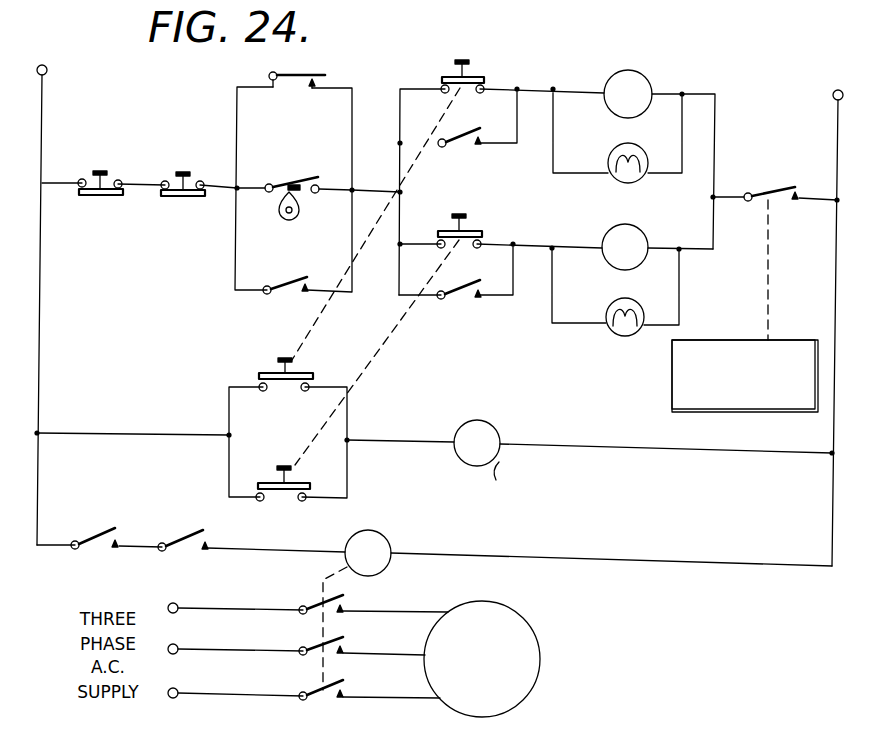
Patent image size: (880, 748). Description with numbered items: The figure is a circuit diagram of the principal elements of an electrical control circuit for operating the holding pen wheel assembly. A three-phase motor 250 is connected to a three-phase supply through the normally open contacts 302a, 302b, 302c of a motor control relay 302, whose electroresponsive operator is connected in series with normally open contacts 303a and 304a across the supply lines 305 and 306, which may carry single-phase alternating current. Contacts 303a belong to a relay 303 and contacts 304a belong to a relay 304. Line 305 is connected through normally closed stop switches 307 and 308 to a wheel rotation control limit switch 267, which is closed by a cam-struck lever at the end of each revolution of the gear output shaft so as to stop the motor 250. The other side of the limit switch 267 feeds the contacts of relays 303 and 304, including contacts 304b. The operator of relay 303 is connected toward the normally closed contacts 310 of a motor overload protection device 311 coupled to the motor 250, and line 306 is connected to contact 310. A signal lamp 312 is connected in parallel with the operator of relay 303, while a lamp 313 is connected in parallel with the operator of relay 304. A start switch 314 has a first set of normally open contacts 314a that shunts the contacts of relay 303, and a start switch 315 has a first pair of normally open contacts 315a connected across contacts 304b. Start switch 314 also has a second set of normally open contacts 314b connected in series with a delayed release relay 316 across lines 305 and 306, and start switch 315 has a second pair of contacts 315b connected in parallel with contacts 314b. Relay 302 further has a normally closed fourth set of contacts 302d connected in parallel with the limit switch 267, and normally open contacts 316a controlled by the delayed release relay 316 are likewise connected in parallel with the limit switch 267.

The motor 250 is at (526, 624).
The wheel rotation control limit switch 267 is at (291, 178).
The motor control relay 302 is at (391, 536).
The normally open contact 302a is at (312, 602).
The normally open contact 302b is at (310, 648).
The normally open contact 302c is at (308, 690).
The normally closed contacts 302d is at (312, 72).
The relay 303 is at (656, 60).
The normally open contacts 303a is at (108, 514).
The relay 304 is at (646, 224).
The normally open contacts 304a is at (180, 533).
The contacts 304b is at (467, 290).
The supply line 305 is at (43, 93).
The supply line 306 is at (837, 126).
The stop switch 307 is at (104, 198).
The stop switch 308 is at (186, 199).
The normally closed contacts 310 is at (769, 188).
The motor overload protection device 311 is at (738, 340).
The signal lamp 312 is at (641, 153).
The lamp 313 is at (653, 292).
The start switch 314 is at (445, 66).
The normally open contacts 314a is at (486, 80).
The normally open contacts 314b is at (258, 379).
The start switch 315 is at (479, 218).
The normally open contacts 315a is at (494, 220).
The normally open contacts 315b is at (308, 487).
The delayed release relay 316 is at (502, 430).
The normally open contacts 316a is at (298, 289).